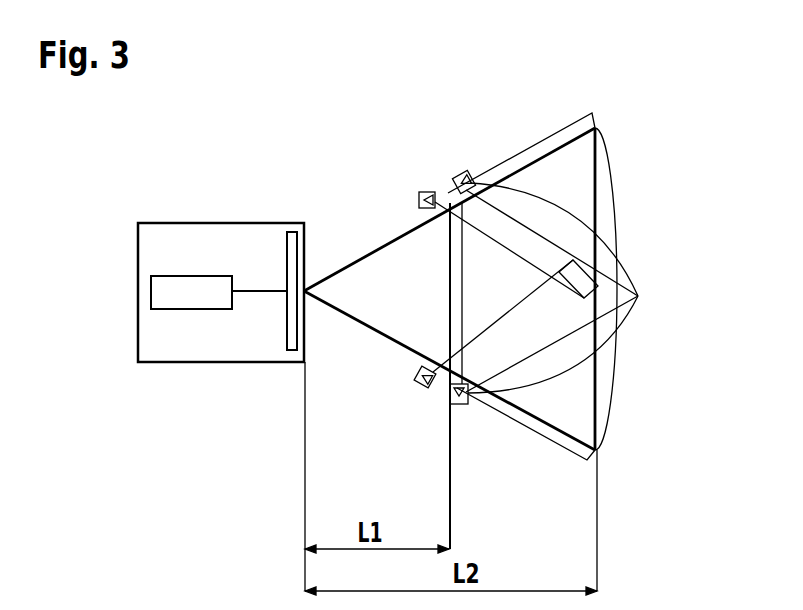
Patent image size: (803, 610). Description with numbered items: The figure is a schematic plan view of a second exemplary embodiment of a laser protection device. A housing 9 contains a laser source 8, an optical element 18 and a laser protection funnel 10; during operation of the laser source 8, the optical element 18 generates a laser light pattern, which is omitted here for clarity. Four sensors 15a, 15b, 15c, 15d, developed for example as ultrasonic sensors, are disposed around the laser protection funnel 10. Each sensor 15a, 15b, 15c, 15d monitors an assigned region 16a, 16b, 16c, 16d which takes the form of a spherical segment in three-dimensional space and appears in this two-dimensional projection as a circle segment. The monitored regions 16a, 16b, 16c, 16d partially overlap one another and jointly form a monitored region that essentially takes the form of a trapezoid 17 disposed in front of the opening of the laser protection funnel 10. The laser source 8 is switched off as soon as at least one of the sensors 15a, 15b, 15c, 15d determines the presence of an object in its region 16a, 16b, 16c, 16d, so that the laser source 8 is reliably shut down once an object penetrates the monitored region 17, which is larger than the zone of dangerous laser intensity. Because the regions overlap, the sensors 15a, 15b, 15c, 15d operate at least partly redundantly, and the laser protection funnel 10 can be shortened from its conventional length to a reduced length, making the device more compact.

The laser source 8 is at (191, 287).
The housing 9 is at (177, 362).
The laser protection funnel 10 is at (355, 262).
The sensor 15a is at (459, 173).
The sensor 15b is at (463, 405).
The sensor 15c is at (418, 385).
The sensor 15d is at (420, 192).
The monitored region 16a is at (624, 323).
The monitored region 16b is at (627, 263).
The monitored region 16c is at (565, 451).
The monitored region 16d is at (560, 127).
The trapezoid 17 is at (608, 158).
The optical element 18 is at (292, 248).